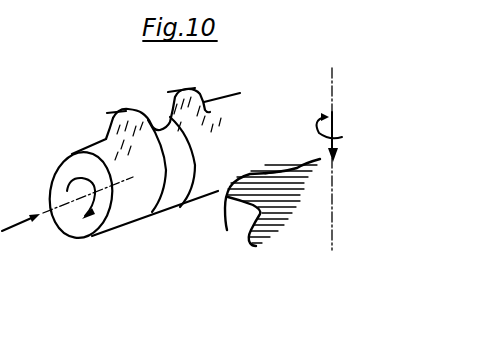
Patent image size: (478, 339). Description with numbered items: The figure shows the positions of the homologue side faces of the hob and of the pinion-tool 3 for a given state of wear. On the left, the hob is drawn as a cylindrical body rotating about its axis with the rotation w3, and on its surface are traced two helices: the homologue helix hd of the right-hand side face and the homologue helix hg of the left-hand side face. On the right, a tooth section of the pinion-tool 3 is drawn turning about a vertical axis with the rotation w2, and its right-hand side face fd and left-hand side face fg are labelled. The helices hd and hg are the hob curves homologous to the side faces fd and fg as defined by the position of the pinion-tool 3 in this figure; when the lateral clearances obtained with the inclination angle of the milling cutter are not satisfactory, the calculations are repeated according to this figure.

The pinion-tool 3 is at (246, 240).
The homologue helix of the left-hand side face hg is at (156, 166).
The homologue helix of the right-hand side face hd is at (193, 162).
The right-hand side face fd is at (268, 160).
The left-hand side face fg is at (223, 225).
The rotation of the pinion-tool w2 is at (359, 128).
The rotation of the hob w3 is at (32, 227).